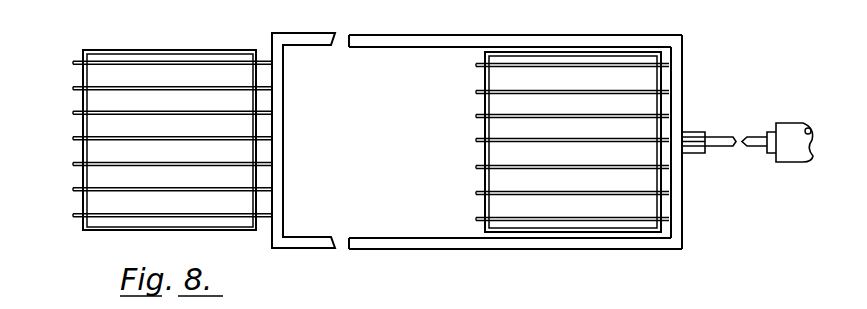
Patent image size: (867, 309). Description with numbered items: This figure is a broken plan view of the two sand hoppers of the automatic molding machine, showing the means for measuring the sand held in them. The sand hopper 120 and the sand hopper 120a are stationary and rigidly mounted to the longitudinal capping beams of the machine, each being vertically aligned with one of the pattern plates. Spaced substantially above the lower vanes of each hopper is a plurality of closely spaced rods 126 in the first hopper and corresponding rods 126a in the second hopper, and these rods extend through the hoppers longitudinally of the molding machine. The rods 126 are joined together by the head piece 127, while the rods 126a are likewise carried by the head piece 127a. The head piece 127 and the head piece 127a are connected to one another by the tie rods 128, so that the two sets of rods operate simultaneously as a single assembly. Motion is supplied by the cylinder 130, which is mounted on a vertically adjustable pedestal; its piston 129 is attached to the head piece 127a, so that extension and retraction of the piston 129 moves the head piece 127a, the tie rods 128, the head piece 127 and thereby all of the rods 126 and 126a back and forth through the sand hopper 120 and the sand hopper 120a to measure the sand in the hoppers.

The sand hopper 120 is at (105, 231).
The rods 126 is at (198, 223).
The head piece 127 is at (282, 127).
The tie rods 128 is at (411, 37).
The head piece 127a is at (678, 68).
The sand hopper 120a is at (546, 233).
The rods 126a is at (628, 222).
The piston 129 is at (718, 147).
The cylinder 130 is at (793, 153).